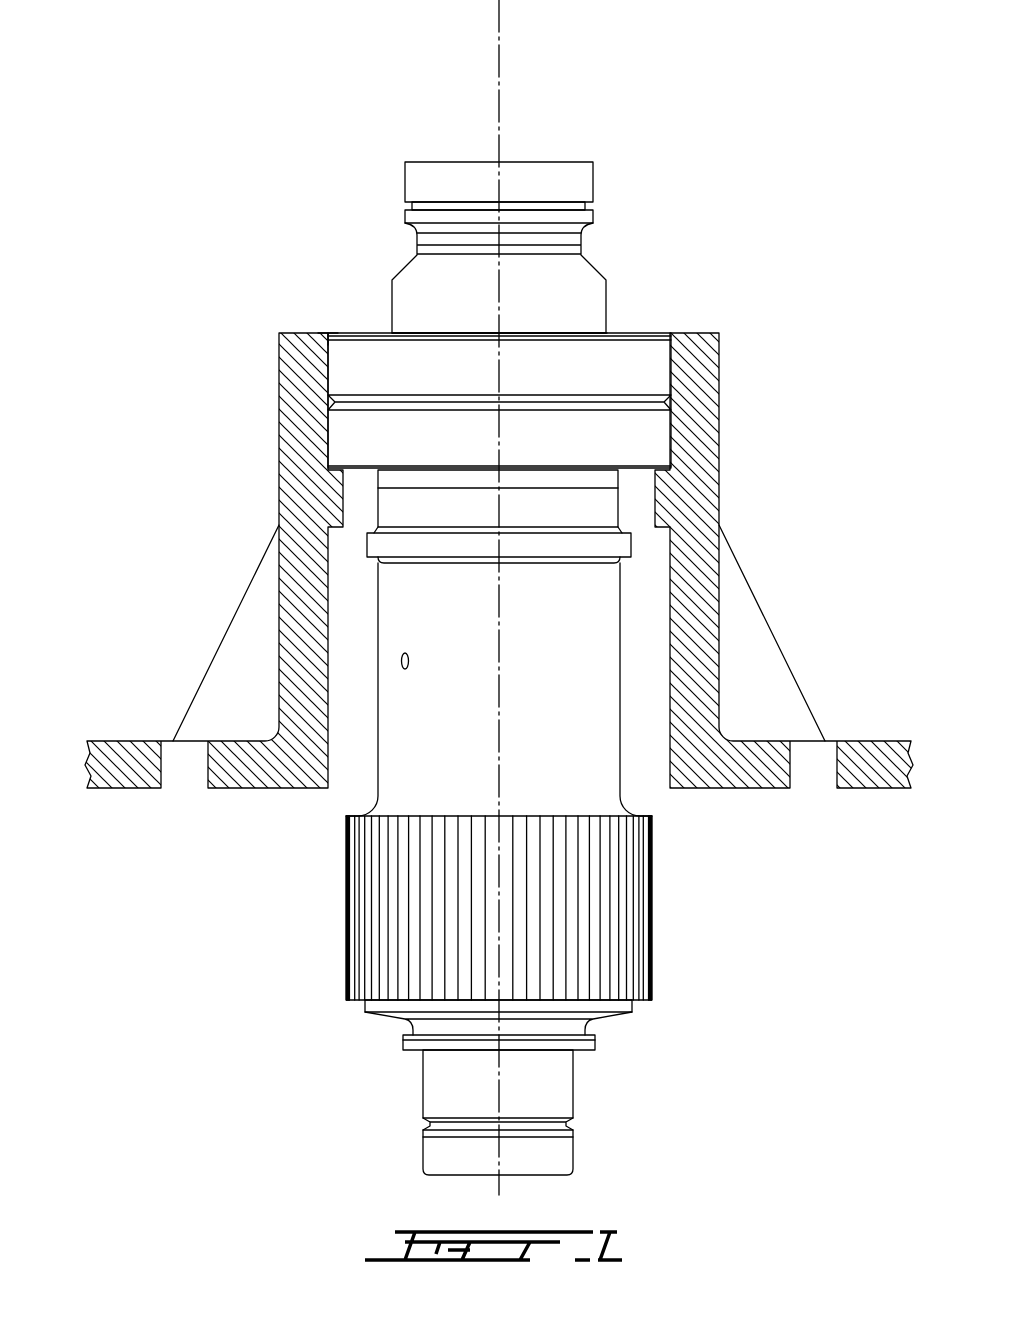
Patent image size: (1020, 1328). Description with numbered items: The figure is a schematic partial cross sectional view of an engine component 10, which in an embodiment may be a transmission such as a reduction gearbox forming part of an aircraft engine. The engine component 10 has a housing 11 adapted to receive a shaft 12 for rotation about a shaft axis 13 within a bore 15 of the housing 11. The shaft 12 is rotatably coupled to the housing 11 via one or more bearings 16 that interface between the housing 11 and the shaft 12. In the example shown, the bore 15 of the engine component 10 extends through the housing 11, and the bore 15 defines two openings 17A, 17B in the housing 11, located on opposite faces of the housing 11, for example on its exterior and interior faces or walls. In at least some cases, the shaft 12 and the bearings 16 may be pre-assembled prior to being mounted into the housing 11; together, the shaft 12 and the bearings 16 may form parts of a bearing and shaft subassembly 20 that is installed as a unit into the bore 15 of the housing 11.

The engine component 10 is at (500, 597).
The housing 11 is at (705, 452).
The shaft 12 is at (600, 262).
The shaft axis 13 is at (500, 43).
The bore 15 is at (608, 822).
The bearings 16 is at (260, 333).
The opening 17A is at (643, 325).
The opening 17B is at (660, 800).
The bearing and shaft subassembly 20 is at (320, 345).